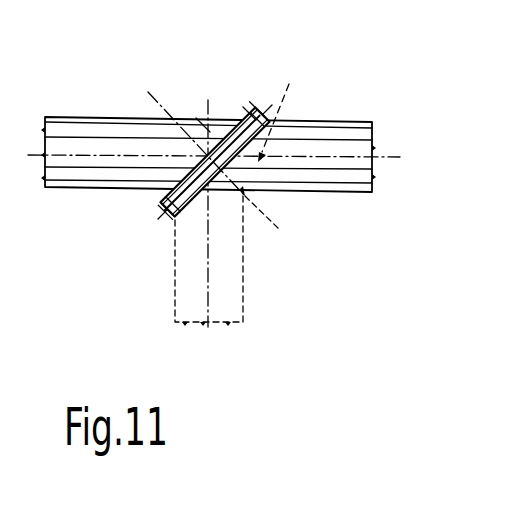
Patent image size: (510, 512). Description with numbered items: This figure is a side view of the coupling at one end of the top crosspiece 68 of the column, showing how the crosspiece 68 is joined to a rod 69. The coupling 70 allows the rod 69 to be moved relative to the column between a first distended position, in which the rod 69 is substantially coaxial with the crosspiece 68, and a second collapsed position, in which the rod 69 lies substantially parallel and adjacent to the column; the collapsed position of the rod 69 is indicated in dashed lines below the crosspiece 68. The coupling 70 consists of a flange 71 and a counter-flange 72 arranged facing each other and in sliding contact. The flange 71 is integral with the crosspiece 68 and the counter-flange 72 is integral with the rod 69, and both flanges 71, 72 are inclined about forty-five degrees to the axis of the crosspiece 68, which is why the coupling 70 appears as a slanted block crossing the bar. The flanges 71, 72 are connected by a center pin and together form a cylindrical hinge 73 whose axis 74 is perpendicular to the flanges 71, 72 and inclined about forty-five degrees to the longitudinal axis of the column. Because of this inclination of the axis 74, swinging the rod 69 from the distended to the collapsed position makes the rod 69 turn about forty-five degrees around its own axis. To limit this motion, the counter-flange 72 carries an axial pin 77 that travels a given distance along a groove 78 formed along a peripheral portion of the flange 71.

The top crosspiece 68 is at (90, 168).
The rod 69 is at (299, 165).
The coupling 70 is at (257, 96).
The flange 71 is at (153, 198).
The counter-flange 72 is at (168, 220).
The cylindrical hinge 73 is at (283, 107).
The axis 74 is at (268, 214).
The axial pin 77 is at (197, 117).
The groove 78 is at (245, 109).